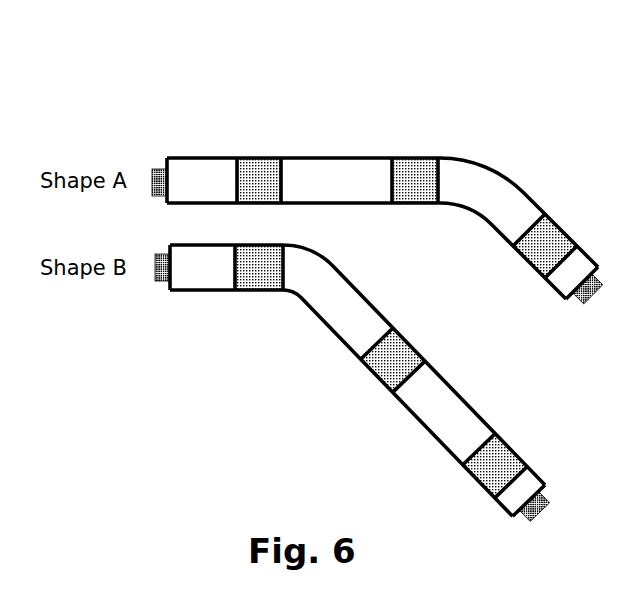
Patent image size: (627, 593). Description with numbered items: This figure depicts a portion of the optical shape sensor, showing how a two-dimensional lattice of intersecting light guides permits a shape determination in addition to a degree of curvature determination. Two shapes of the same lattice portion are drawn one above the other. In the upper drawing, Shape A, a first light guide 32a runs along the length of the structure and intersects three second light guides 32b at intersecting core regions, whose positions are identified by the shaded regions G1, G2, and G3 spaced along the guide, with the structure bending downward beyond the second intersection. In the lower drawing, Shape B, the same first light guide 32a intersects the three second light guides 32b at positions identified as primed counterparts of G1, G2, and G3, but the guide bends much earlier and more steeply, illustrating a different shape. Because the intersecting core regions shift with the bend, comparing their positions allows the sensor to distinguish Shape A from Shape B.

The first light guide 32a is at (185, 182).
The second light guides 32b is at (414, 263).
The first intersecting core region position G1 is at (259, 224).
The second intersecting core region position G2 is at (399, 275).
The third intersecting core region position G3 is at (520, 356).